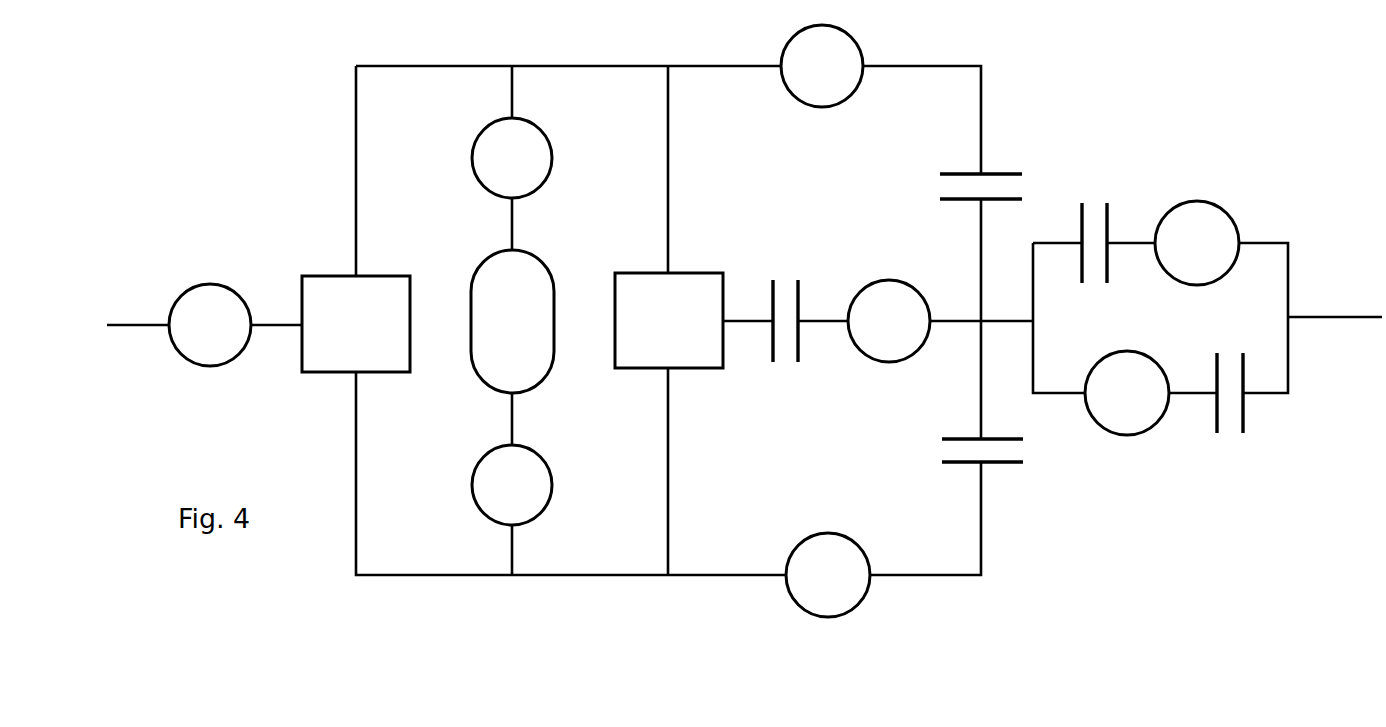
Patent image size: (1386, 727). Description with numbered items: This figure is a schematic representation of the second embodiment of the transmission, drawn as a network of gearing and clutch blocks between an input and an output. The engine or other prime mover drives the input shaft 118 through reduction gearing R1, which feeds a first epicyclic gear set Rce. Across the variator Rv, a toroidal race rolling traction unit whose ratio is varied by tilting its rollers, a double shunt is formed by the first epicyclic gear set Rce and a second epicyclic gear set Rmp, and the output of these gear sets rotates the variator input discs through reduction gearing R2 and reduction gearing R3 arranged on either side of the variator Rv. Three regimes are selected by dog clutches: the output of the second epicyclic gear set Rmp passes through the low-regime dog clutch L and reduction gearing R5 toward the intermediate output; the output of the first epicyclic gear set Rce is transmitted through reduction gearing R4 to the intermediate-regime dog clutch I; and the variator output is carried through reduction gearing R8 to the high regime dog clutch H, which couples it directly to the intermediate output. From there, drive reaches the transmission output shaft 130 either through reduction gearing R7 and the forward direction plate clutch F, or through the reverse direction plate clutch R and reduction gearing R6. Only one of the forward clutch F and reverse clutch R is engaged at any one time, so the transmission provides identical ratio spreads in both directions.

The input shaft 118 is at (133, 325).
The transmission output shaft 130 is at (1323, 317).
The reduction gearing R1 is at (210, 325).
The first epicyclic gear set Rce is at (356, 324).
The reduction gearing R2 is at (512, 158).
The variator Rv is at (512, 321).
The reduction gearing R3 is at (512, 485).
The second epicyclic gear set Rmp is at (669, 320).
The reduction gearing R4 is at (822, 66).
The reduction gearing R5 is at (889, 321).
The reduction gearing R6 is at (1197, 243).
The reduction gearing R7 is at (1127, 393).
The reduction gearing R8 is at (828, 575).
The low-regime dog clutch L is at (784, 291).
The intermediate-regime dog clutch I is at (953, 186).
The high regime dog clutch H is at (955, 452).
The reverse direction plate clutch R is at (1092, 216).
The forward direction plate clutch F is at (1231, 420).